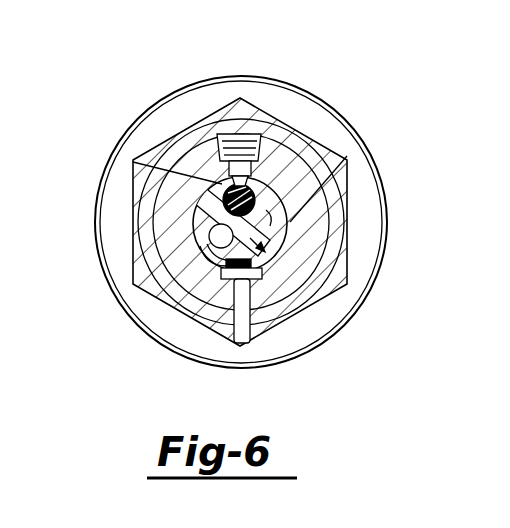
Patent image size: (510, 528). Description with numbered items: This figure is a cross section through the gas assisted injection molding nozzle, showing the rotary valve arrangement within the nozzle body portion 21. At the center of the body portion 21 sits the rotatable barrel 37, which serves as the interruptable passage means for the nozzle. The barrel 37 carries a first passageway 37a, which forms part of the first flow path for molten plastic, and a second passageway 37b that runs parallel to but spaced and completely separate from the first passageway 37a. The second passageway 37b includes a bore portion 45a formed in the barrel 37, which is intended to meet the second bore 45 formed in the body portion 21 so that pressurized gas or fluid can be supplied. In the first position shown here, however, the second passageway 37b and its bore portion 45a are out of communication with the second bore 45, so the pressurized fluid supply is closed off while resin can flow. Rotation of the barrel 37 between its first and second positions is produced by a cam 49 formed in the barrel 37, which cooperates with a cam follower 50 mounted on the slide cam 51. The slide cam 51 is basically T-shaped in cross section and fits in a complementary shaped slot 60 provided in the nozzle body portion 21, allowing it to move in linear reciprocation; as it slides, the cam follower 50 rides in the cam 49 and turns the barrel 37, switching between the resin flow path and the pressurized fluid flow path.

The body portion 21 is at (288, 171).
The rotatable barrel 37 is at (286, 228).
The first passageway 37a is at (225, 185).
The second passageway 37b is at (223, 190).
The second bore 45 is at (278, 176).
The portion of the second bore 45a is at (226, 263).
The cam 49 is at (221, 248).
The cam follower 50 is at (224, 276).
The slide cam 51 is at (250, 340).
The slot 60 is at (256, 278).